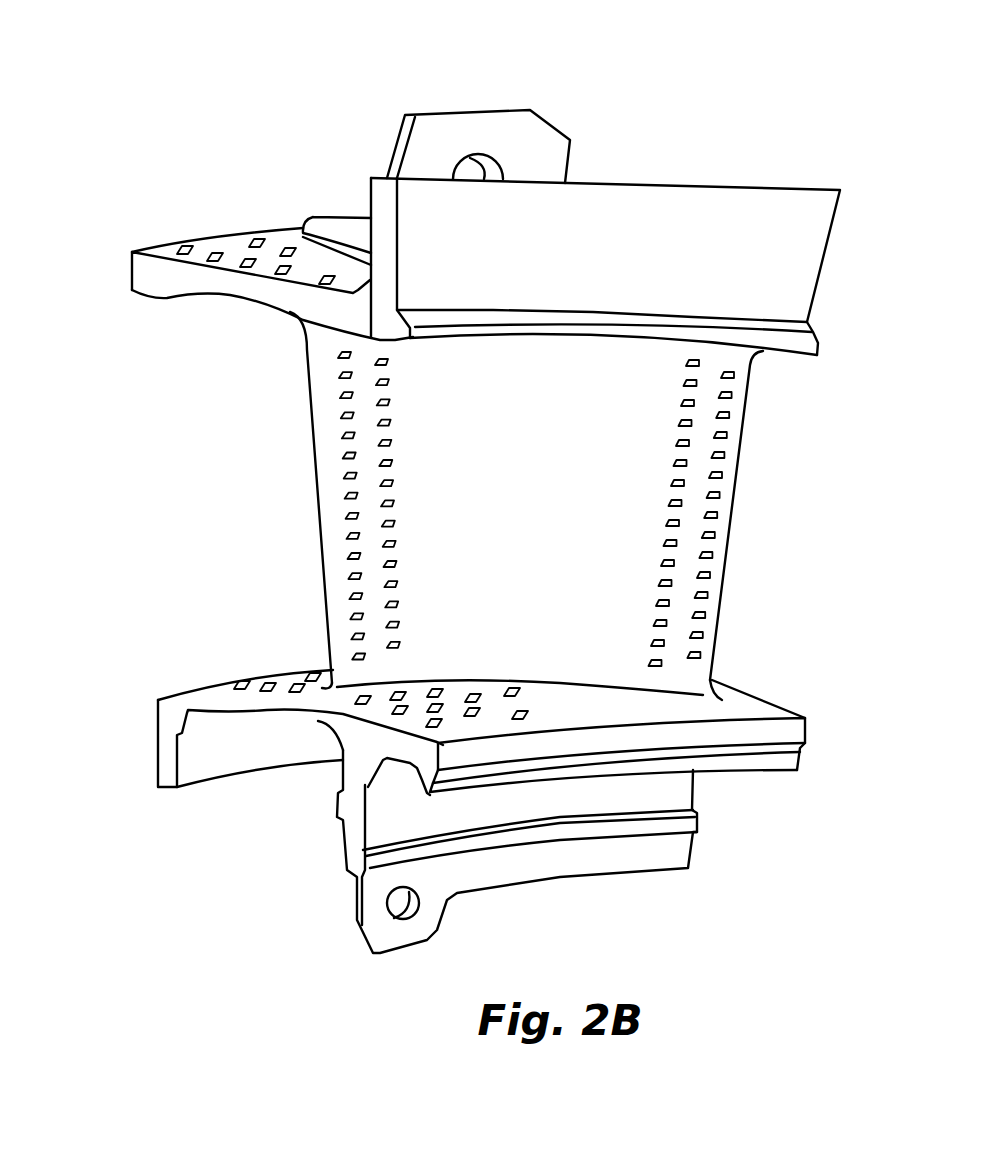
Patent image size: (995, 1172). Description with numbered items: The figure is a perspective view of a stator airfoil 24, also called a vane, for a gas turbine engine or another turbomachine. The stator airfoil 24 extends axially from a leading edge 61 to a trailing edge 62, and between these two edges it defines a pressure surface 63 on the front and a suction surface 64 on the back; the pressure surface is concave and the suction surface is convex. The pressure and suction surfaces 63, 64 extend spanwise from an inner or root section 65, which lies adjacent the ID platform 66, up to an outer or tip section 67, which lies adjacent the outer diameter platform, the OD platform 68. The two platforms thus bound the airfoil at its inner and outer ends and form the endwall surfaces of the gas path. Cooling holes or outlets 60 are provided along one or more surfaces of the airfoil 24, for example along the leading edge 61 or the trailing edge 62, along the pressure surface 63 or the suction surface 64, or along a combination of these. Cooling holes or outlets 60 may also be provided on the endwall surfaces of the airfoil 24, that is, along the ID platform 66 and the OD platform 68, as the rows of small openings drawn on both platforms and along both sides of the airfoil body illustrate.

The stator airfoil 24 is at (152, 85).
The cooling holes 60 is at (255, 240).
The leading edge 61 is at (310, 387).
The trailing edge 62 is at (720, 570).
The pressure surface 63 is at (432, 520).
The suction surface 64 is at (748, 503).
The inner section 65 is at (343, 665).
The ID platform 66 is at (793, 728).
The outer section 67 is at (320, 346).
The OD platform 68 is at (147, 285).